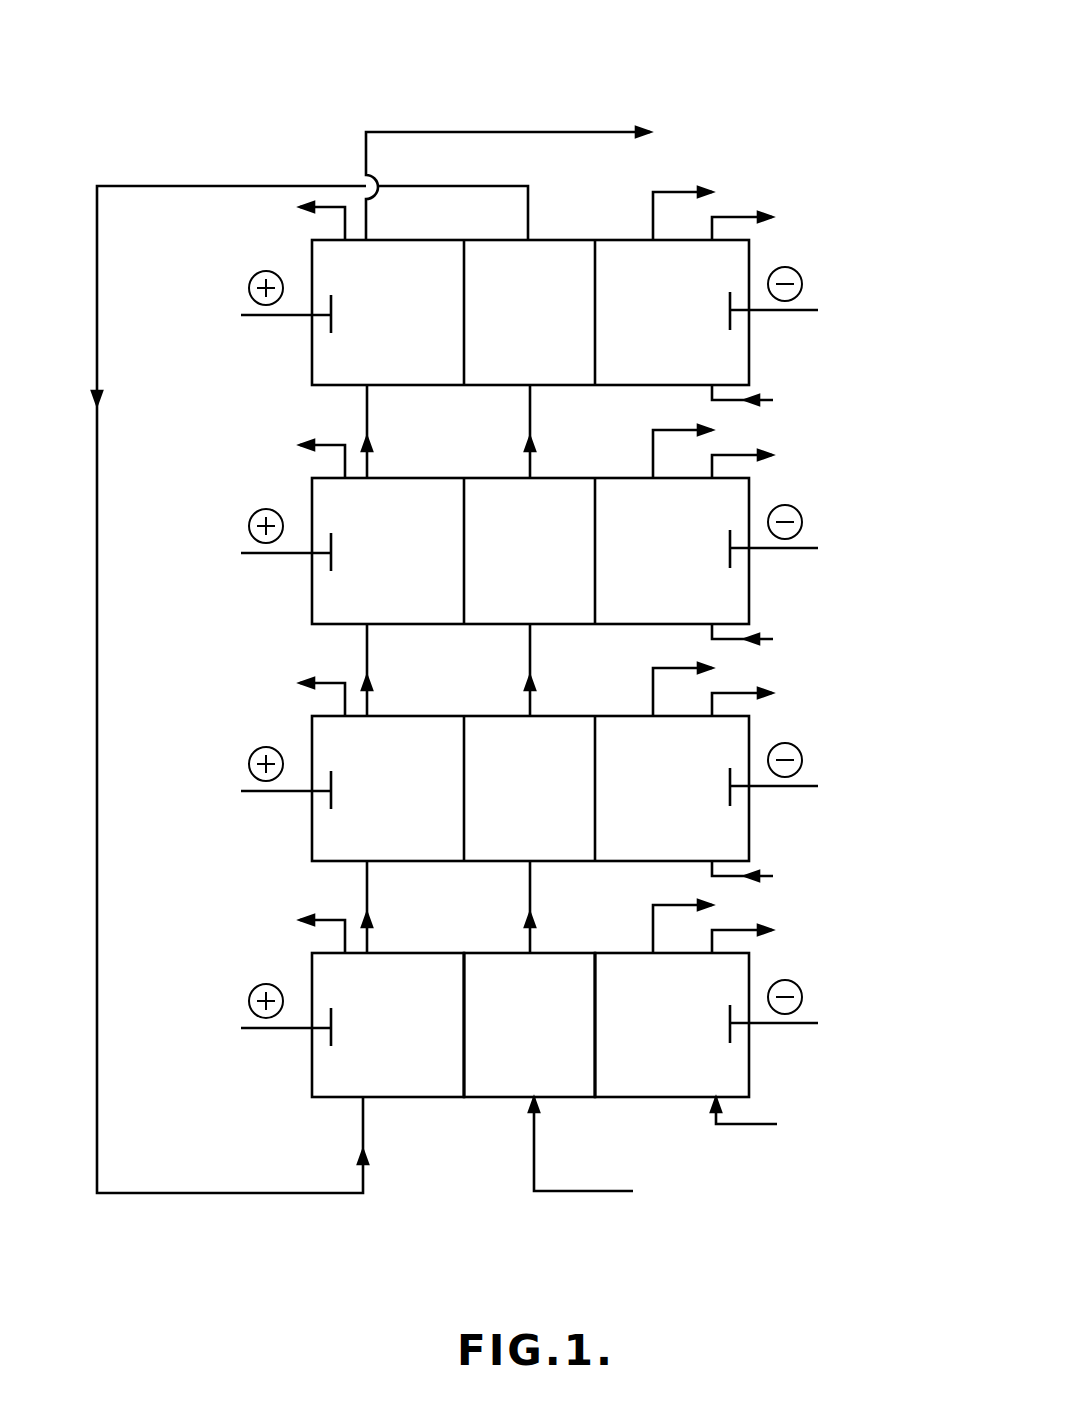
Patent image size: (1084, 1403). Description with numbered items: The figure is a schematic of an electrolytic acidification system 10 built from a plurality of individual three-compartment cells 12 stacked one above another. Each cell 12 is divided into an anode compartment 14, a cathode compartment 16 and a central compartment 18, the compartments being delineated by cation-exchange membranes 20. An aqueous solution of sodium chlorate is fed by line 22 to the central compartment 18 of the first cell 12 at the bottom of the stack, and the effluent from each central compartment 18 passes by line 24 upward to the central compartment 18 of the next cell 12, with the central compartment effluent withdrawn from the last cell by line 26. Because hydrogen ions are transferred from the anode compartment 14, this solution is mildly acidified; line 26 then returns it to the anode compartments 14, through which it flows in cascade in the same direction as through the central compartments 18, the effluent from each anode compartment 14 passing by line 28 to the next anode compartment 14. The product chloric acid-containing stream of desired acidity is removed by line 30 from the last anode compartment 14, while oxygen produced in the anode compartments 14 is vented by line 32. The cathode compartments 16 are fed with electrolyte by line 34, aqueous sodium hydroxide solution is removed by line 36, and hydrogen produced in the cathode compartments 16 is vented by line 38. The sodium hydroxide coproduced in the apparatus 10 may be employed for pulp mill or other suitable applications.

The electrolytic acidification system 10 is at (848, 64).
The three-compartment cell 12 is at (828, 1048).
The anode compartment 14 is at (330, 1068).
The cathode compartment 16 is at (742, 1062).
The central compartment 18 is at (498, 1090).
The cation-exchange membranes 20 is at (595, 1053).
The line 22 is at (578, 1193).
The line 24 is at (530, 410).
The line 26 is at (97, 500).
The line 28 is at (367, 410).
The line 30 is at (535, 132).
The line 32 is at (323, 683).
The line 34 is at (752, 1125).
The line 36 is at (730, 928).
The line 38 is at (657, 925).